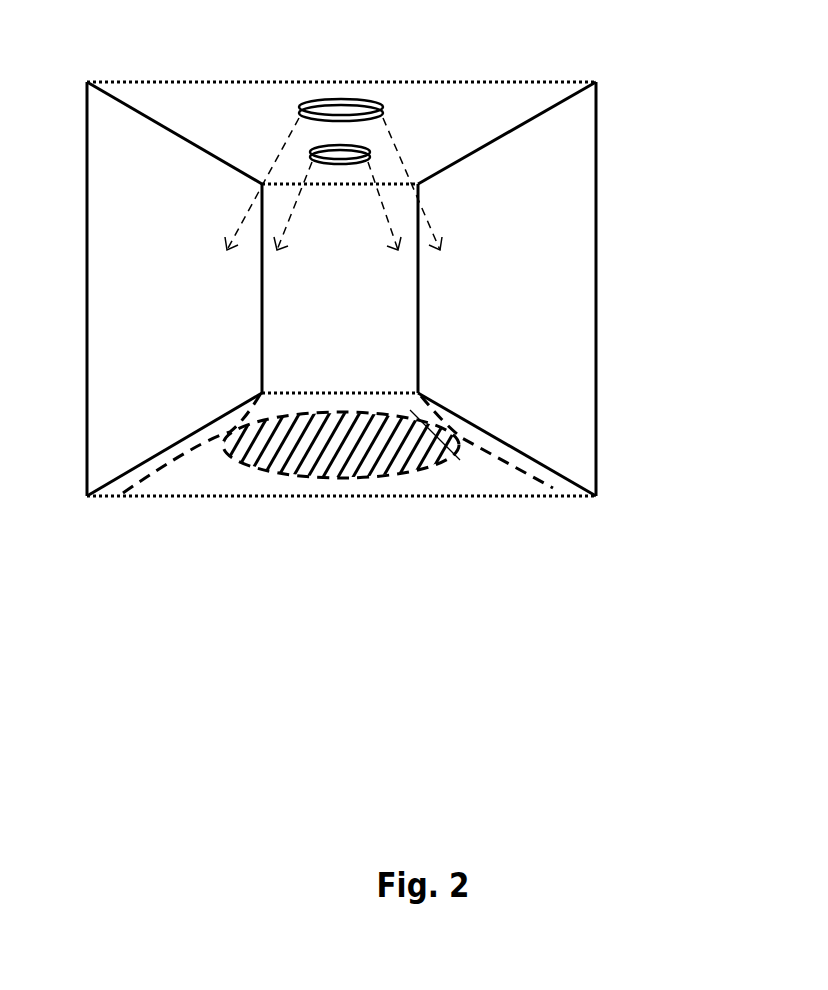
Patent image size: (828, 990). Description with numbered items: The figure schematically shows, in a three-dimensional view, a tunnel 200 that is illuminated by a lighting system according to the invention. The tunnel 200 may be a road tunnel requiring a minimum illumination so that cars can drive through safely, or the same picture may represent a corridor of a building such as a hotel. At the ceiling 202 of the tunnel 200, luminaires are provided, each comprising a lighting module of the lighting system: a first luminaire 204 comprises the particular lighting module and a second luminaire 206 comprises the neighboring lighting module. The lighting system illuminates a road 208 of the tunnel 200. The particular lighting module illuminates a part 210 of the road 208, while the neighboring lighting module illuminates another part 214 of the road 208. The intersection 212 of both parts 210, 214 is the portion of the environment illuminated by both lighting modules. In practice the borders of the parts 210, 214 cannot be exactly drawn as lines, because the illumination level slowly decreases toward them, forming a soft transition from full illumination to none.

The tunnel 200 is at (117, 584).
The ceiling 202 is at (228, 110).
The first luminaire 204 is at (335, 110).
The second luminaire 206 is at (337, 158).
The road 208 is at (480, 437).
The part of the road 210 is at (178, 477).
The intersection 212 is at (380, 453).
The another part of the road 214 is at (457, 453).